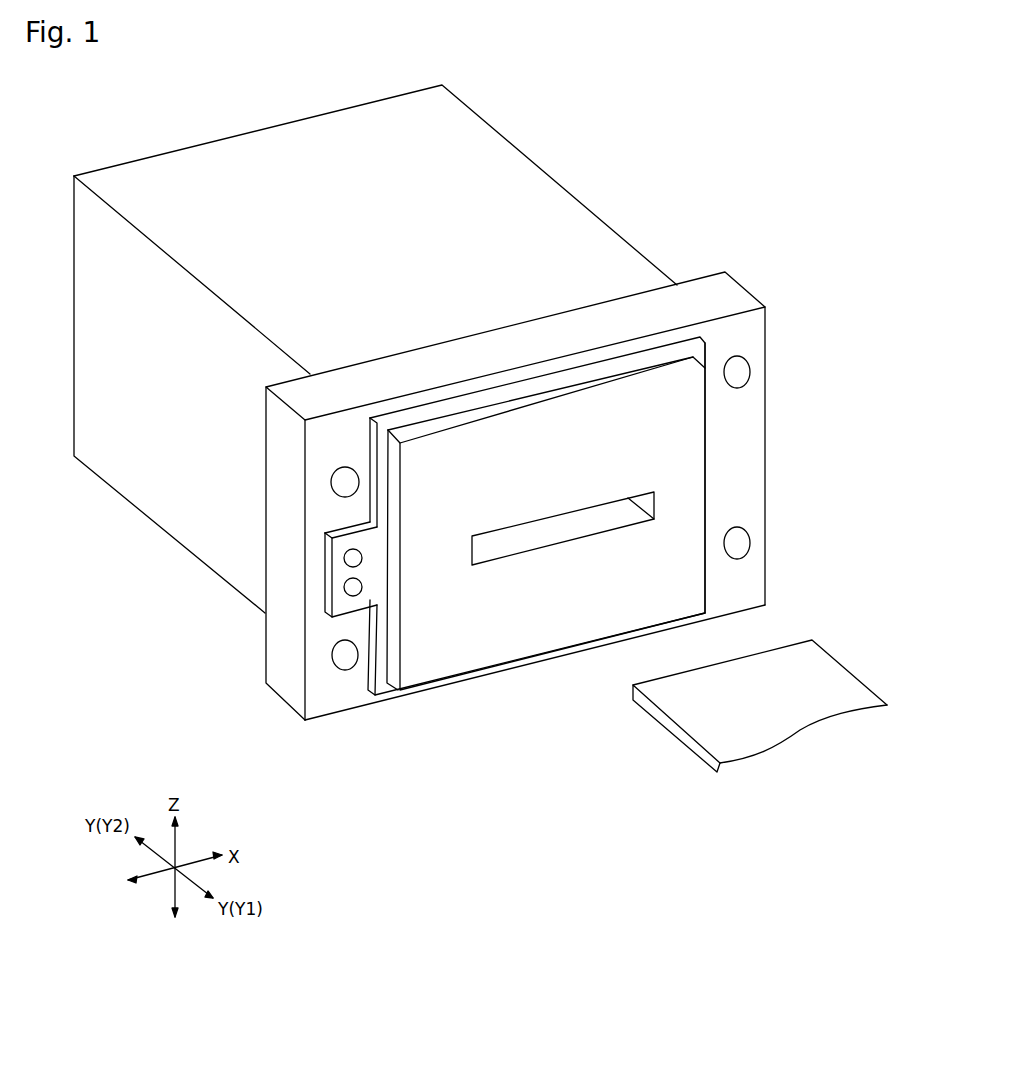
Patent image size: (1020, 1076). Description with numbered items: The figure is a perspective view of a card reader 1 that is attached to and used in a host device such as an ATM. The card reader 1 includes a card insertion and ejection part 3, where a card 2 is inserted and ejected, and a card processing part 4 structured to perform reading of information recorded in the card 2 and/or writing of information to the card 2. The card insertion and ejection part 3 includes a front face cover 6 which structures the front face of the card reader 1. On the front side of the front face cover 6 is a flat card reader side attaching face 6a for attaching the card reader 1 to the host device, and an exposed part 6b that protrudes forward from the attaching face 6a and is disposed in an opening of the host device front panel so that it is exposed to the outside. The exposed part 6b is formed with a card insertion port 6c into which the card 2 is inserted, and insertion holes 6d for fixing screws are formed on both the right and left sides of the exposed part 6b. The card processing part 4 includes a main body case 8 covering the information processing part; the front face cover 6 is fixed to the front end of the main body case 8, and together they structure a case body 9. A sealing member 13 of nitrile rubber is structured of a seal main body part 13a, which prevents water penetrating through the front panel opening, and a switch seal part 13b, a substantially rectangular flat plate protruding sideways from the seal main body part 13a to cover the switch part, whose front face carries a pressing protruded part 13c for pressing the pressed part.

The card reader 1 is at (683, 146).
The card 2 is at (840, 666).
The card insertion and ejection part 3 is at (537, 318).
The card processing part 4 is at (497, 130).
The front face cover 6 is at (748, 290).
The card reader side attaching face 6a is at (752, 450).
The exposed part 6b is at (522, 645).
The card insertion port 6c is at (568, 530).
The insertion holes 6d is at (738, 372).
The main body case 8 is at (629, 243).
The case body 9 is at (804, 207).
The sealing member 13 is at (423, 405).
The seal main body part 13a is at (546, 489).
The switch seal part 13b is at (325, 603).
The pressing protruded part 13c is at (343, 587).